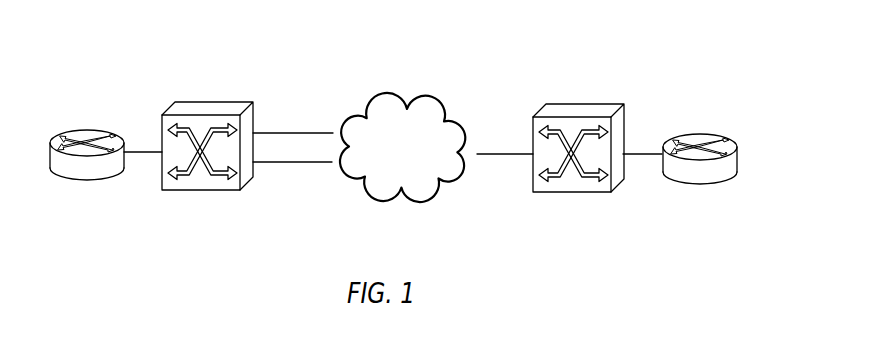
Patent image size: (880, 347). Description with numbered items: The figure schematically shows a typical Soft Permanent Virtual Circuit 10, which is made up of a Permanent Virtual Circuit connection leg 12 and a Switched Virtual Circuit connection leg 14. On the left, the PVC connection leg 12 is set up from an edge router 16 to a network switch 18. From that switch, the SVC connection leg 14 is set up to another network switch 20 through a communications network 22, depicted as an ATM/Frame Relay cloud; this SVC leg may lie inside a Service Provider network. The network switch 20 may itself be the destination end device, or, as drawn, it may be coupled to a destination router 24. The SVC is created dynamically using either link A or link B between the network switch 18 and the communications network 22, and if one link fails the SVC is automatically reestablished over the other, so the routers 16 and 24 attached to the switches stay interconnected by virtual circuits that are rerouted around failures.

The Soft Permanent Virtual Circuit 10 is at (706, 72).
The Permanent Virtual Circuit connection leg 12 is at (125, 85).
The Switched Virtual Circuit connection leg 14 is at (303, 66).
The edge router 16 is at (70, 181).
The network switch 18 is at (200, 191).
The network switch 20 is at (577, 193).
The communications network 22 is at (383, 204).
The destination device (router) 24 is at (717, 181).